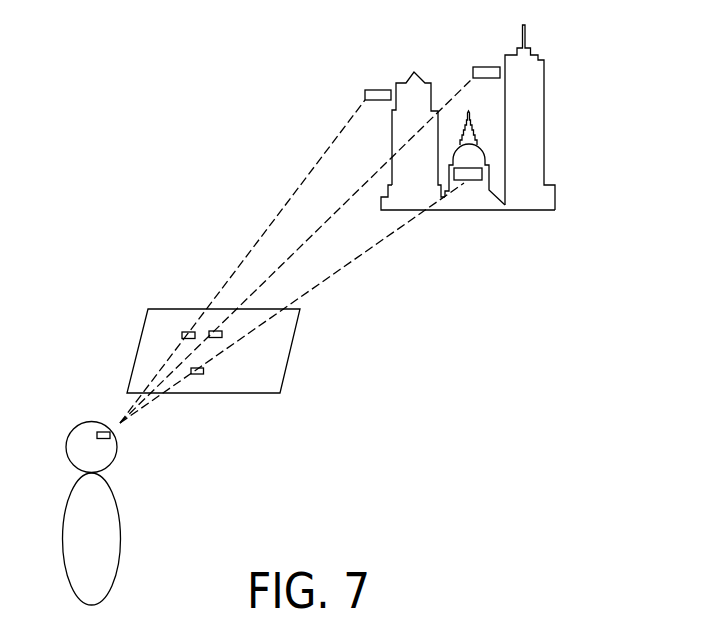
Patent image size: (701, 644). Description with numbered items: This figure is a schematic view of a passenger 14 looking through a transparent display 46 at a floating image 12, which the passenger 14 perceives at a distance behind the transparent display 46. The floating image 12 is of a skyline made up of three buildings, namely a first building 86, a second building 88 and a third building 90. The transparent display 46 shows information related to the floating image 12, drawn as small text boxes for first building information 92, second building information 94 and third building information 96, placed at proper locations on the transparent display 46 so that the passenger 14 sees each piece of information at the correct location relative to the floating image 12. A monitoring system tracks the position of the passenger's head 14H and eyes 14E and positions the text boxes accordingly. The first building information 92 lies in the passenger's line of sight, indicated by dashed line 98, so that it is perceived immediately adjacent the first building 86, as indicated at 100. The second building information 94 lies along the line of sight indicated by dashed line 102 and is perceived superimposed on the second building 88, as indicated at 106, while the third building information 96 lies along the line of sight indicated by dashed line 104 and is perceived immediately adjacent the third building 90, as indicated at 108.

The floating image 12 is at (482, 117).
The passenger 14 is at (106, 550).
The eyes 14E is at (103, 432).
The head 14H is at (90, 447).
The transparent display 46 is at (300, 330).
The first building 86 is at (417, 86).
The second building 88 is at (475, 155).
The third building 90 is at (533, 143).
The first building information 92 is at (182, 335).
The second building information 94 is at (199, 375).
The third building information 96 is at (212, 331).
The dashed line 98 is at (278, 216).
The location immediately adjacent the first building 100 is at (365, 93).
The dashed line 102 is at (372, 248).
The dashed line 104 is at (347, 201).
The location superimposed on the second building 106 is at (472, 174).
The location immediately adjacent the third building 108 is at (488, 67).